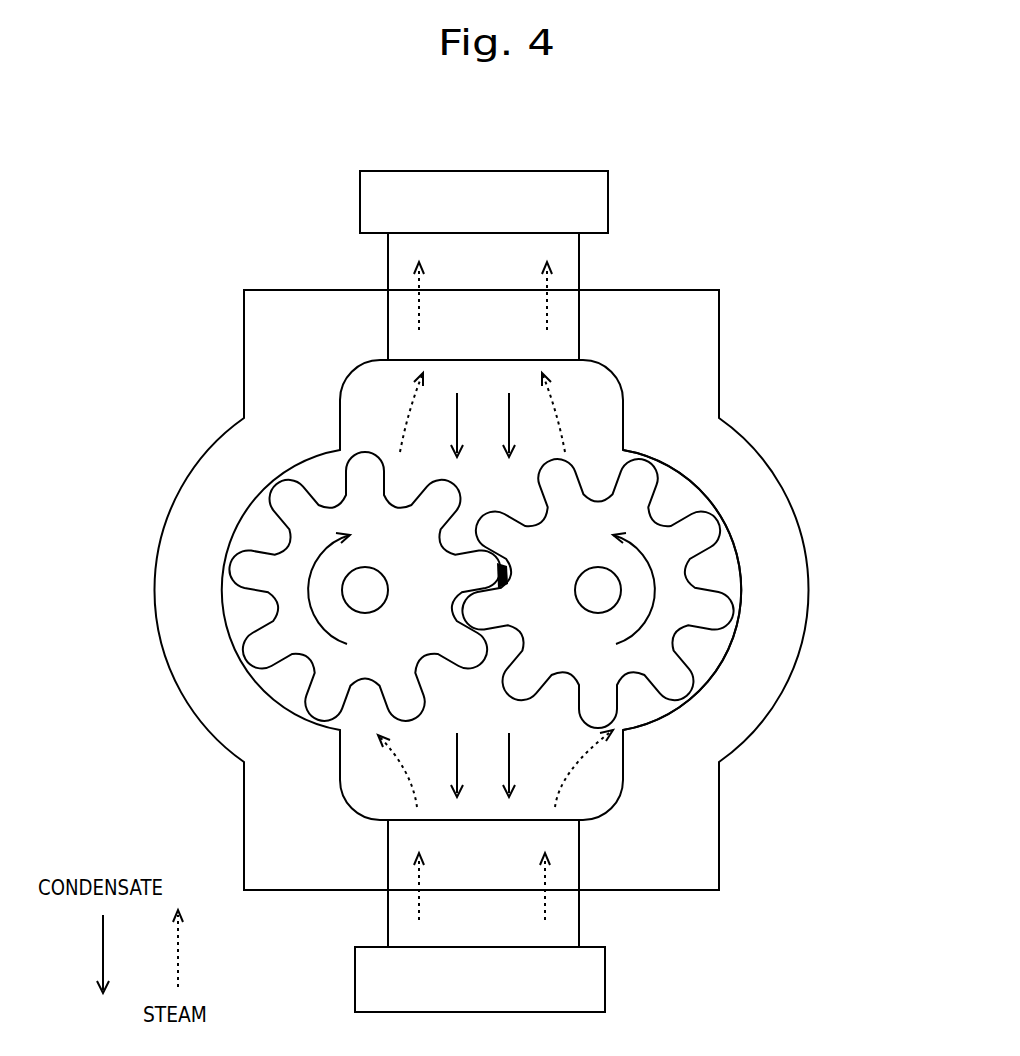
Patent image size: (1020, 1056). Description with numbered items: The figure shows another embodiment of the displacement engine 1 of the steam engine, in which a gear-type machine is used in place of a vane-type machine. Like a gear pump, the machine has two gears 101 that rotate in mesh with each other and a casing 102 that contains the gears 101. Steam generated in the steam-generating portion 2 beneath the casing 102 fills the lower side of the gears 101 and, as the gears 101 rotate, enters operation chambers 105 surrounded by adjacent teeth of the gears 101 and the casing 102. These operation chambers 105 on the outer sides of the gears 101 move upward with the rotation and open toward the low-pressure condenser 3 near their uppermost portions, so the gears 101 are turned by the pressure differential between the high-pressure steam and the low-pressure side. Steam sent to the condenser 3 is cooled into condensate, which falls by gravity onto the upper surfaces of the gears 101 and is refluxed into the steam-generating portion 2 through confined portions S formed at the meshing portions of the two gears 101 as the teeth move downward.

The displacement engine 1 is at (727, 330).
The steam-generating portion 2 is at (608, 980).
The condenser 3 is at (612, 202).
The gears 101 is at (287, 503).
The casing 102 is at (693, 390).
The operation chambers 105 is at (732, 580).
The confined portions S is at (511, 578).